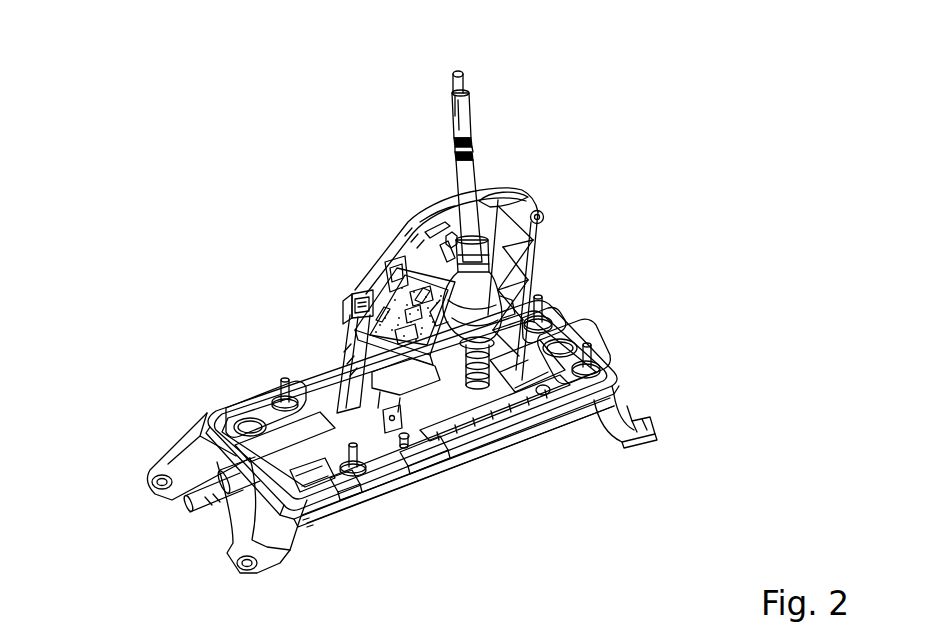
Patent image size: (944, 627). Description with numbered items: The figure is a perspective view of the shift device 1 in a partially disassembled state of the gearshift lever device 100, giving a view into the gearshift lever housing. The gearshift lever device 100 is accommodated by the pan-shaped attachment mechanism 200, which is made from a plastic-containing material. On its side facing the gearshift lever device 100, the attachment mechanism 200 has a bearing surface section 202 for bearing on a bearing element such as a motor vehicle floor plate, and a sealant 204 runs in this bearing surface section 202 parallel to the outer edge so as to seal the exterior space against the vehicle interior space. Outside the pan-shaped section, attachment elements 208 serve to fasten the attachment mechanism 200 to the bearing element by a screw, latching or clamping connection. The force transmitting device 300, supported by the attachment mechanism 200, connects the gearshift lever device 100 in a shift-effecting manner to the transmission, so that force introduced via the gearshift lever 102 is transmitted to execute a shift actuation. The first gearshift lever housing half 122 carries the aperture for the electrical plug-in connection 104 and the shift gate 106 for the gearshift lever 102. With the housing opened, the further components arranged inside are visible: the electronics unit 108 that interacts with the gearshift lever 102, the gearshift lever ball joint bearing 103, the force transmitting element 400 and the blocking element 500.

The shift device 1 is at (233, 172).
The gearshift lever device 100 is at (366, 178).
The gearshift lever 102 is at (462, 126).
The gearshift lever ball joint bearing 103 is at (507, 295).
The electrical plug-in connection 104 is at (373, 313).
The shift gate 106 is at (524, 195).
The electronics unit 108 is at (420, 275).
The first gearshift lever housing half 122 is at (418, 210).
The attachment mechanism 200 is at (172, 390).
The bearing surface section 202 is at (340, 494).
The sealant 204 is at (406, 450).
The attachment elements 208 is at (157, 480).
The force transmitting device 300 is at (166, 520).
The force transmitting element 400 is at (447, 413).
The blocking element 500 is at (390, 446).